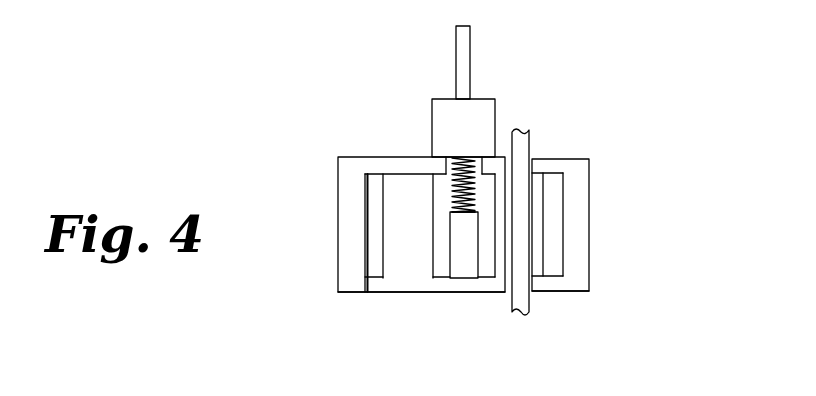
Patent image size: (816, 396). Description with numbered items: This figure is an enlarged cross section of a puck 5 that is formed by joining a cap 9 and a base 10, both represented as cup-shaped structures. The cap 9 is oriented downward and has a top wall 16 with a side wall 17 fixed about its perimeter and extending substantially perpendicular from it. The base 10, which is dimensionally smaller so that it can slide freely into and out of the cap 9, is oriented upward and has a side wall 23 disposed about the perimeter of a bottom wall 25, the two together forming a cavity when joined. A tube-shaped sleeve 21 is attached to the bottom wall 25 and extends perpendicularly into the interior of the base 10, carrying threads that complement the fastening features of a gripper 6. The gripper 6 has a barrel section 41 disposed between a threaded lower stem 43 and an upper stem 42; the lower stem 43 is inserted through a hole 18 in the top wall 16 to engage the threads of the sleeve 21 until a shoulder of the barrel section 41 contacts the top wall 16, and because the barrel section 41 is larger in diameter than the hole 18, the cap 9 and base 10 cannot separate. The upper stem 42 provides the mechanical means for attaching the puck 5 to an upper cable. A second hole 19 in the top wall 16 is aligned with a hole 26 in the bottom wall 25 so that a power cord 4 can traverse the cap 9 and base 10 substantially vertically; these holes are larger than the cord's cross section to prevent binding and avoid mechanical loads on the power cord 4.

The power cord 4 is at (529, 218).
The puck 5 is at (288, 130).
The gripper 6 is at (512, 97).
The cap 9 is at (590, 163).
The base 10 is at (375, 245).
The top wall 16 is at (368, 157).
The side wall 17 is at (578, 278).
The hole 18 is at (448, 180).
The second hole 19 is at (530, 157).
The sleeve 21 is at (433, 252).
The side wall 23 is at (550, 197).
The bottom wall 25 is at (418, 285).
The hole 26 is at (505, 295).
The barrel section 41 is at (432, 128).
The upper stem 42 is at (456, 63).
The lower stem 43 is at (448, 205).